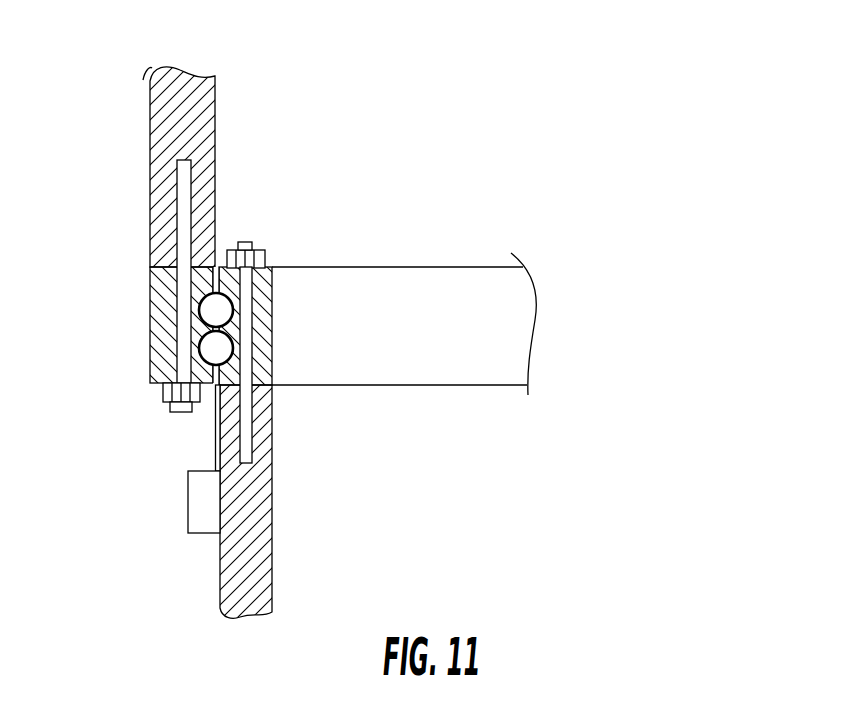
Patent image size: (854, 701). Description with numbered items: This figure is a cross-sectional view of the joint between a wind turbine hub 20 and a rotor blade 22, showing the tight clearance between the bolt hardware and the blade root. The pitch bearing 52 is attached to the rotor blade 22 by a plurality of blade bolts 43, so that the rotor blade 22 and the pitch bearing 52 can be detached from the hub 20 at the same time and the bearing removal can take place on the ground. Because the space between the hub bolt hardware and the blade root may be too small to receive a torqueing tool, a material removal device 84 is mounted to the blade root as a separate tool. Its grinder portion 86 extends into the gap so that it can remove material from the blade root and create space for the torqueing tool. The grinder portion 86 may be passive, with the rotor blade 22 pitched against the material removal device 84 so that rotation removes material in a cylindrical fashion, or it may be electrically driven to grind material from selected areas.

The hub 20 is at (148, 93).
The pitch bearing 52 is at (148, 288).
The rotor blade 22 is at (276, 511).
The blade bolt 43 is at (244, 407).
The grinder portion 86 is at (217, 429).
The material removal device 84 is at (186, 500).